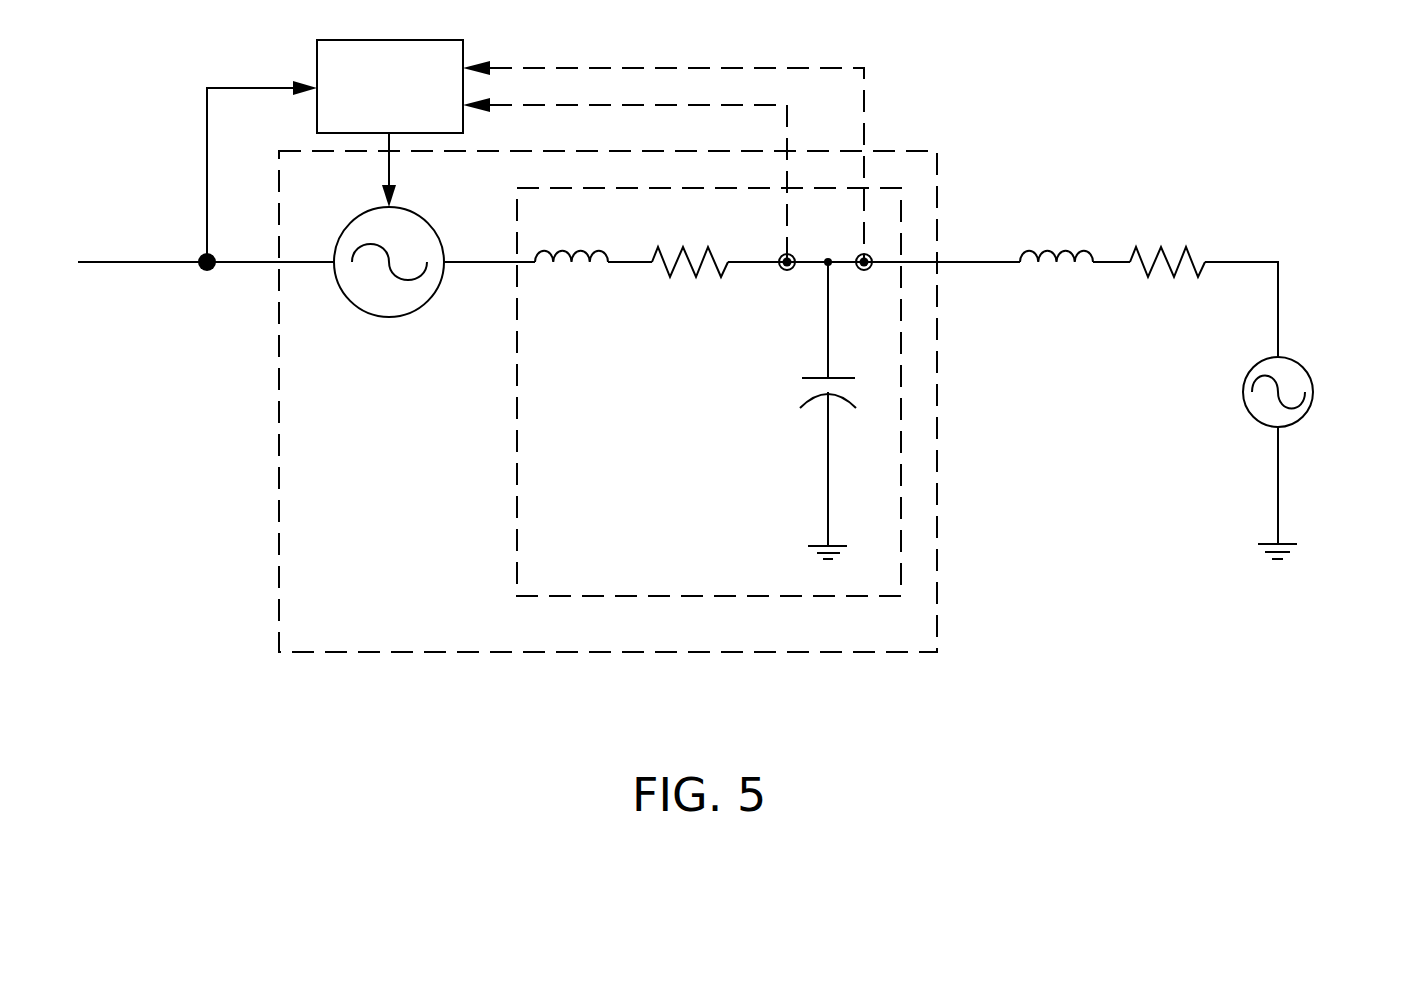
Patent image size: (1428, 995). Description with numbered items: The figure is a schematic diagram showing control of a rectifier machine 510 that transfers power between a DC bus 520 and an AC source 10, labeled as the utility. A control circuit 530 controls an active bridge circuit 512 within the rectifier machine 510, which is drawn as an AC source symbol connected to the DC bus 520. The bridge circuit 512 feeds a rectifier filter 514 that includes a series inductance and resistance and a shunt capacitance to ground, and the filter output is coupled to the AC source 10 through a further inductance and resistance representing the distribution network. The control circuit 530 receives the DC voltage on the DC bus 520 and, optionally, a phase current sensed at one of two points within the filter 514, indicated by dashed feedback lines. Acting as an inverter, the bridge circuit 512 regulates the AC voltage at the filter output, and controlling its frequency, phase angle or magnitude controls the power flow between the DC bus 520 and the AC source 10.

The AC source 10 is at (1312, 390).
The rectifier machine 510 is at (610, 150).
The active bridge circuit 512 is at (427, 225).
The rectifier filter 514 is at (708, 187).
The DC bus 520 is at (242, 265).
The control circuit 530 is at (392, 38).